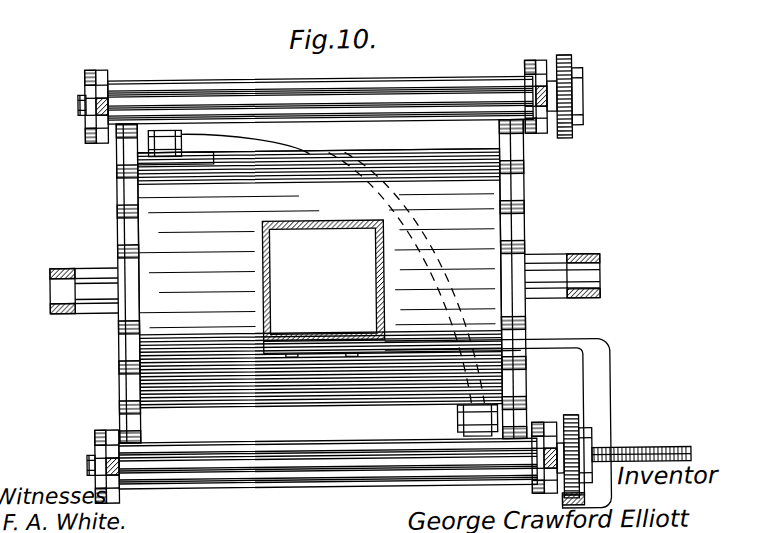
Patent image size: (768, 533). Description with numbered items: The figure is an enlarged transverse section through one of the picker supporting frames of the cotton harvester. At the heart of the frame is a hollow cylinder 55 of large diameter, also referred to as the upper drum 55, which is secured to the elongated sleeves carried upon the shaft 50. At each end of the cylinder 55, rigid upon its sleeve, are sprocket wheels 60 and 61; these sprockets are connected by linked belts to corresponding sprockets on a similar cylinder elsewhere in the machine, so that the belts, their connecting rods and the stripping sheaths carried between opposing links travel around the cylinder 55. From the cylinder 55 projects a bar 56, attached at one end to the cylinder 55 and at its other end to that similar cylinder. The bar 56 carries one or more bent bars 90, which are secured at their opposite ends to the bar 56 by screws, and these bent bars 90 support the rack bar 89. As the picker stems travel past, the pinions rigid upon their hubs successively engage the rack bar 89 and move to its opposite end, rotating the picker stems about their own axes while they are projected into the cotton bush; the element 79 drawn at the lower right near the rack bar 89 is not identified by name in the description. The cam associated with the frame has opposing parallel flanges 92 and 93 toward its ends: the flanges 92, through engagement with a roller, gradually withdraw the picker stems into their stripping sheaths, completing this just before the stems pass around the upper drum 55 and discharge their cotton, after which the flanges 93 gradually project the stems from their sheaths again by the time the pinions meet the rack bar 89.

The shaft 50 is at (598, 276).
The hollow cylinder 55 is at (320, 278).
The bar 56 is at (263, 258).
The sprocket wheel 60 is at (118, 206).
The sprocket wheel 61 is at (525, 194).
The threaded shaft 79 is at (633, 452).
The rack bar 89 is at (560, 502).
The bent bar 90 is at (610, 356).
The cam flange 92 is at (260, 138).
The cam flange 93 is at (456, 420).